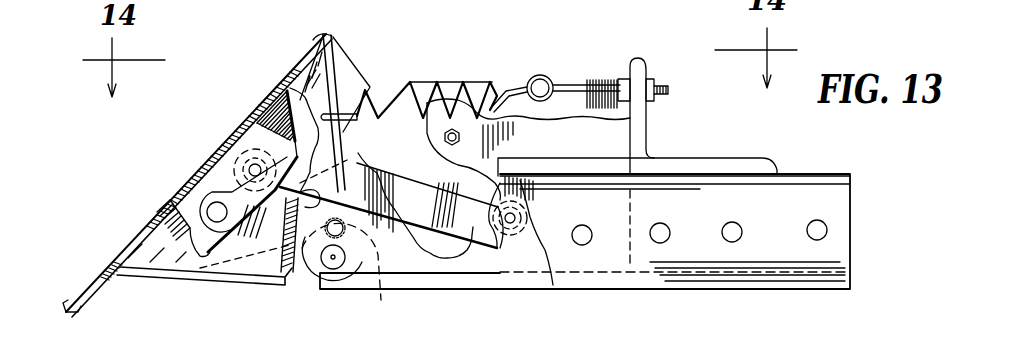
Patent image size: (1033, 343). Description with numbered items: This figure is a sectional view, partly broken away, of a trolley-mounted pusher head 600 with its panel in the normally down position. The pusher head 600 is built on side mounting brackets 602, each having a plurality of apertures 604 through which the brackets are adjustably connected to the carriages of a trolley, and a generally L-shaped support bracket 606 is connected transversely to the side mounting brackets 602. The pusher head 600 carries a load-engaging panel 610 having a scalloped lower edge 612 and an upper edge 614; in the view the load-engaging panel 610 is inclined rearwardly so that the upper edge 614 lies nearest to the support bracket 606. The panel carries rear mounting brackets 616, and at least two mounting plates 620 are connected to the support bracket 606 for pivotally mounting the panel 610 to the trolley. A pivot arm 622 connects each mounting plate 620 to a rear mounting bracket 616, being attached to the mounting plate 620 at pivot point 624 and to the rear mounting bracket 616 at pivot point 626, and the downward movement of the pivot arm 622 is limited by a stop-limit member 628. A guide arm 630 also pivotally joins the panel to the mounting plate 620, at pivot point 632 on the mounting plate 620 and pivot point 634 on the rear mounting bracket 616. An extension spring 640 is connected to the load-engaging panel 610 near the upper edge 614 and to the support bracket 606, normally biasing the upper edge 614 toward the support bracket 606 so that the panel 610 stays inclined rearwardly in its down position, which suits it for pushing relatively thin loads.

The pusher head 600 is at (613, 49).
The side mounting bracket 602 is at (812, 278).
The aperture 604 is at (735, 237).
The support bracket 606 is at (678, 168).
The load-engaging panel 610 is at (258, 87).
The scalloped lower edge 612 is at (72, 300).
The upper edge 614 is at (333, 45).
The rear mounting bracket 616 is at (217, 178).
The mounting plate 620 is at (418, 152).
The pivot arm 622 is at (470, 230).
The pivot point 624 is at (510, 223).
The pivot point 626 is at (252, 157).
The stop-limit member 628 is at (381, 300).
The guide arm 630 is at (272, 272).
The pivot point 632 is at (335, 268).
The pivot point 634 is at (212, 213).
The extension spring 640 is at (488, 84).